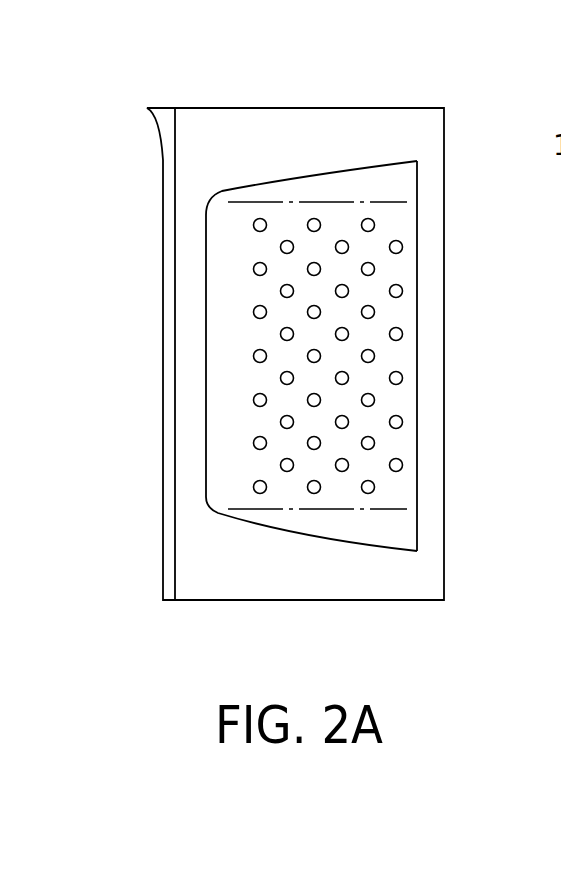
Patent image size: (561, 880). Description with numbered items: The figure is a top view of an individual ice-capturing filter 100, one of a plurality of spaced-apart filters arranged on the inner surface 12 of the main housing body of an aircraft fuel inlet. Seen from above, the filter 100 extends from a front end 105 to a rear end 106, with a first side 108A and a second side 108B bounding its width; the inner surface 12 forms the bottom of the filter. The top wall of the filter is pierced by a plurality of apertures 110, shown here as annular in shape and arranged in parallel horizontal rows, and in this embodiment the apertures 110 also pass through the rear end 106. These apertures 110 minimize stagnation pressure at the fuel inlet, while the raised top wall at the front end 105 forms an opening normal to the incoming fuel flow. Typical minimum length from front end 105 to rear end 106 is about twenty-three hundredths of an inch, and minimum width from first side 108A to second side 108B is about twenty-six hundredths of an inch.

The ice-capturing filter 100 is at (130, 80).
The inner surface 12 is at (432, 300).
The rear end 106 is at (218, 333).
The front end 105 is at (417, 350).
The first side 108A is at (336, 186).
The second side 108B is at (342, 528).
The apertures 110 is at (258, 226).